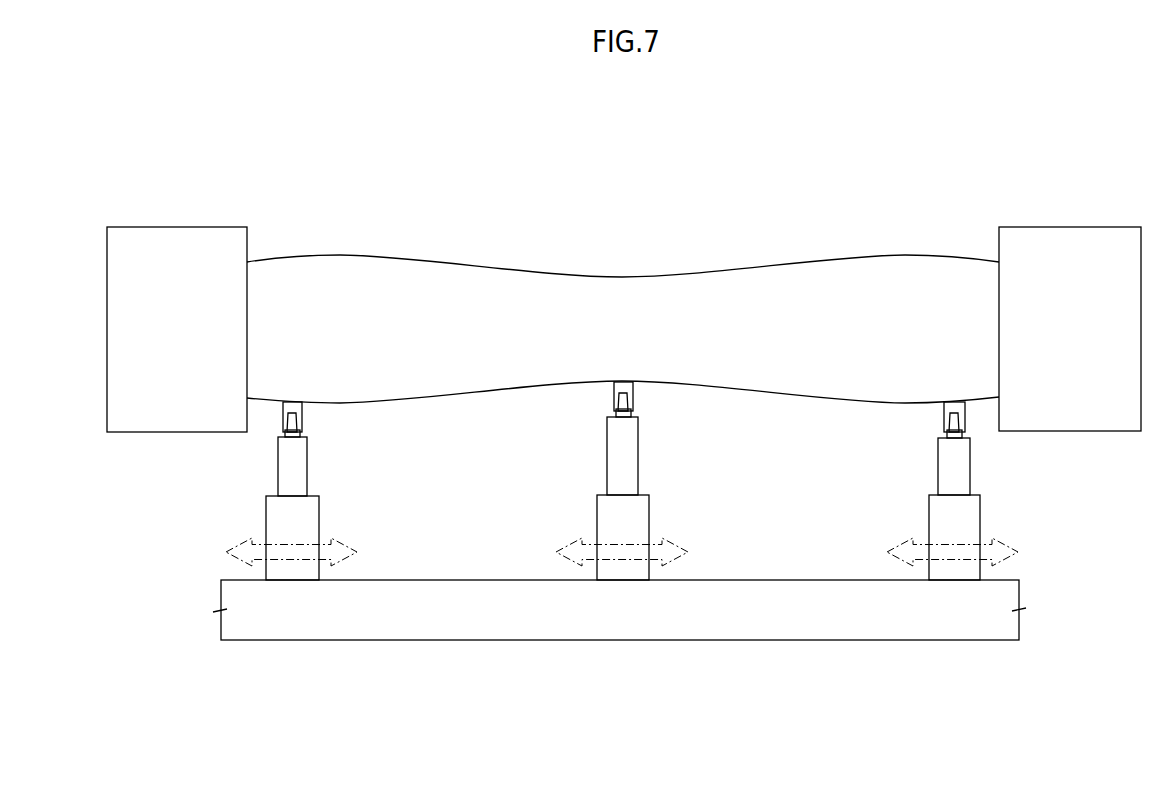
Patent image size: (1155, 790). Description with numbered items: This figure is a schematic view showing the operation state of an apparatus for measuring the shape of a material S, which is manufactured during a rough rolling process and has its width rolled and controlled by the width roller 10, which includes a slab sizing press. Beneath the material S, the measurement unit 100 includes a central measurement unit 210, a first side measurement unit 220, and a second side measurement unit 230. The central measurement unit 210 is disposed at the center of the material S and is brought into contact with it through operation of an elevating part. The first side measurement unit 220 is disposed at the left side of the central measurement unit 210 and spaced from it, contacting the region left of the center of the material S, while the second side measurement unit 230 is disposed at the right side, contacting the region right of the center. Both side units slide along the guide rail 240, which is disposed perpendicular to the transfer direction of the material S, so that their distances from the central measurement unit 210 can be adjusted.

The width roller 10 is at (1049, 208).
The material S is at (863, 273).
The measurement unit 100 is at (572, 481).
The central measurement unit 210 is at (585, 525).
The first side measurement unit 220 is at (248, 525).
The second side measurement unit 230 is at (915, 525).
The guide rail 240 is at (907, 628).